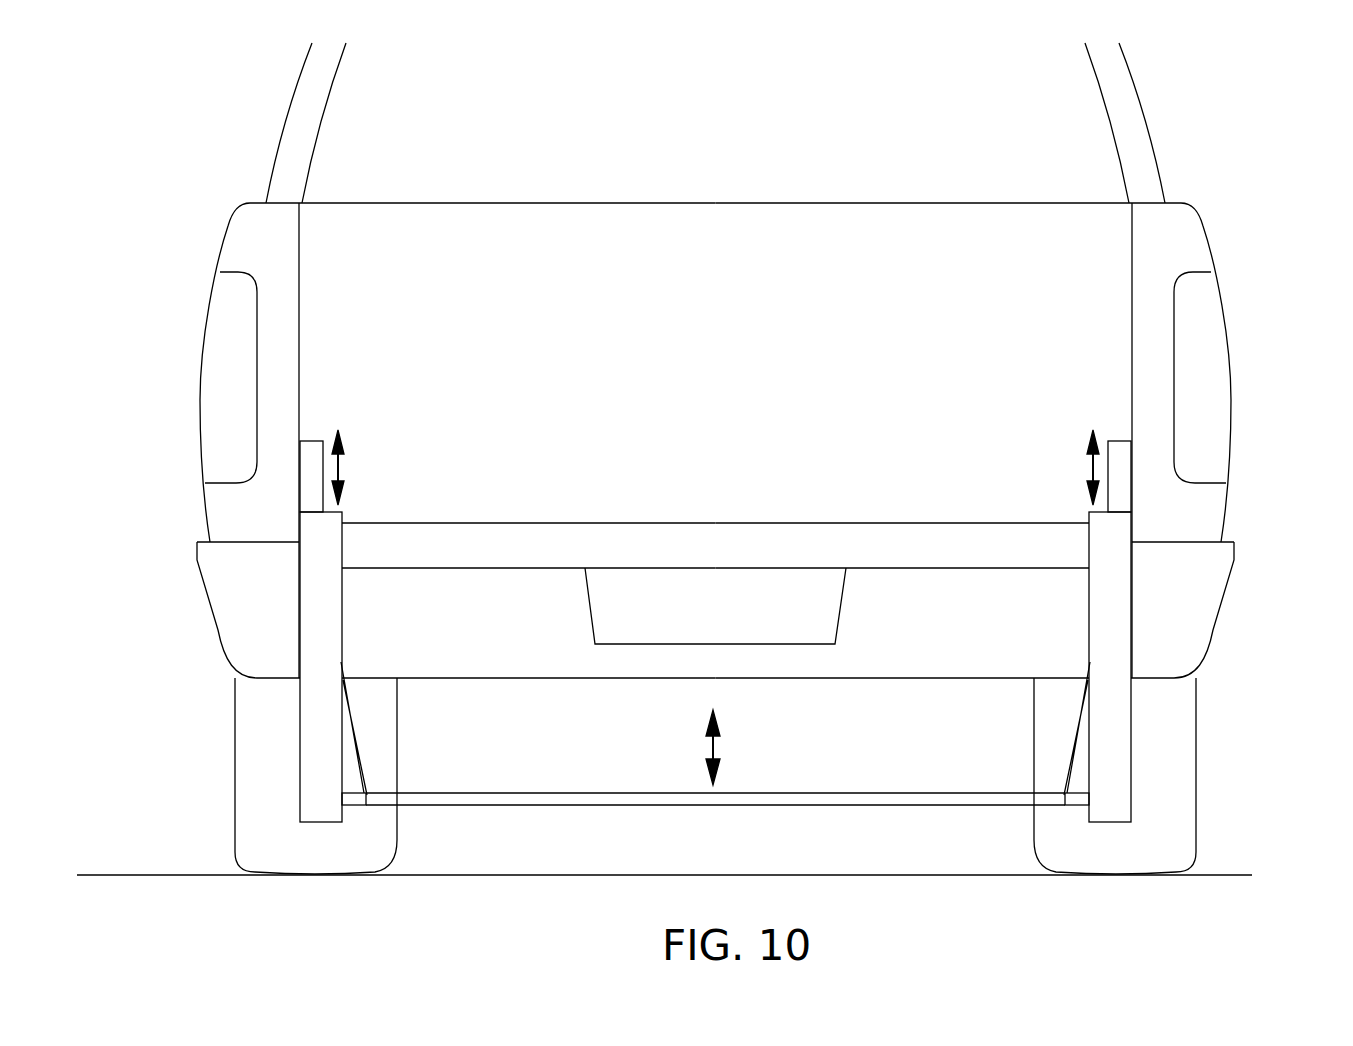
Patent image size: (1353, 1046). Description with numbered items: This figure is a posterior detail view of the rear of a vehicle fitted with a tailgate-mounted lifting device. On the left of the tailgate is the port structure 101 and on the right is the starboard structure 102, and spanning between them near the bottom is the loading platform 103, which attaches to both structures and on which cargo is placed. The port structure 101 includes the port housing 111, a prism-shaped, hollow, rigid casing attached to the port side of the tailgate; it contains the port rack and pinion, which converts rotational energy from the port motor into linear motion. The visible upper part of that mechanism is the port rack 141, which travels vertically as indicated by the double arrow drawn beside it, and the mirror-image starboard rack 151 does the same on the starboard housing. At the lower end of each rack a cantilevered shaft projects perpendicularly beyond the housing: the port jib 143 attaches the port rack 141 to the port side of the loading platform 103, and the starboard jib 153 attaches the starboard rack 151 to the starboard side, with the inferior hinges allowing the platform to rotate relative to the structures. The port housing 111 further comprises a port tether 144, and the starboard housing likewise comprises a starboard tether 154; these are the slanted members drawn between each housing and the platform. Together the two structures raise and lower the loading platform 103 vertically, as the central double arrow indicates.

The port structure 101 is at (280, 800).
The starboard structure 102 is at (1150, 793).
The loading platform 103 is at (637, 793).
The port housing 111 is at (318, 725).
The port rack 141 is at (315, 447).
The starboard rack 151 is at (1118, 447).
The port jib 143 is at (352, 800).
The starboard jib 153 is at (1080, 798).
The port tether 144 is at (357, 748).
The starboard tether 154 is at (1075, 748).